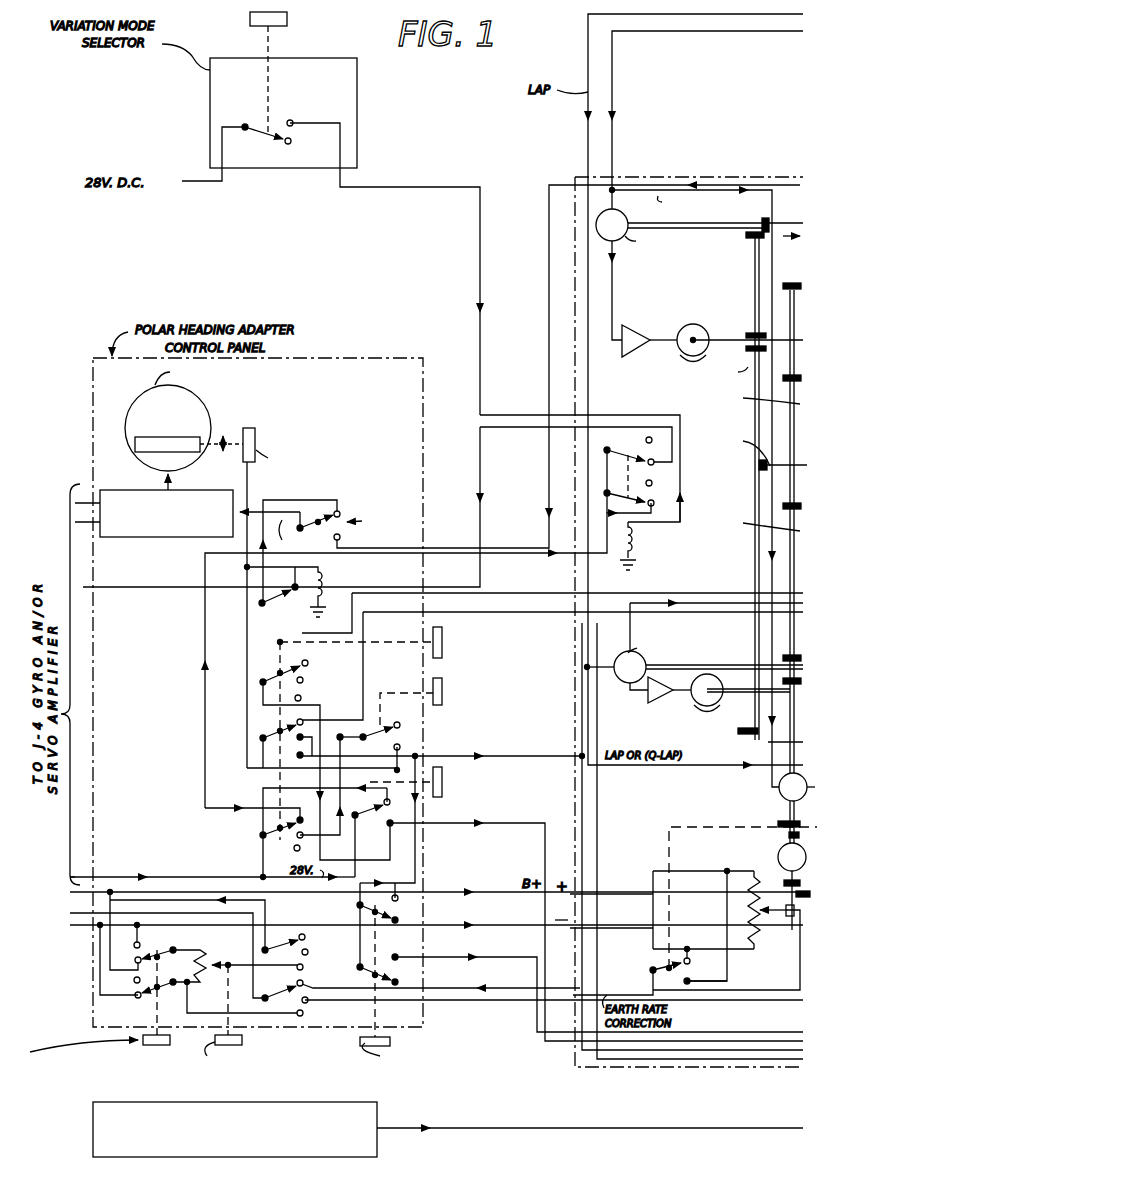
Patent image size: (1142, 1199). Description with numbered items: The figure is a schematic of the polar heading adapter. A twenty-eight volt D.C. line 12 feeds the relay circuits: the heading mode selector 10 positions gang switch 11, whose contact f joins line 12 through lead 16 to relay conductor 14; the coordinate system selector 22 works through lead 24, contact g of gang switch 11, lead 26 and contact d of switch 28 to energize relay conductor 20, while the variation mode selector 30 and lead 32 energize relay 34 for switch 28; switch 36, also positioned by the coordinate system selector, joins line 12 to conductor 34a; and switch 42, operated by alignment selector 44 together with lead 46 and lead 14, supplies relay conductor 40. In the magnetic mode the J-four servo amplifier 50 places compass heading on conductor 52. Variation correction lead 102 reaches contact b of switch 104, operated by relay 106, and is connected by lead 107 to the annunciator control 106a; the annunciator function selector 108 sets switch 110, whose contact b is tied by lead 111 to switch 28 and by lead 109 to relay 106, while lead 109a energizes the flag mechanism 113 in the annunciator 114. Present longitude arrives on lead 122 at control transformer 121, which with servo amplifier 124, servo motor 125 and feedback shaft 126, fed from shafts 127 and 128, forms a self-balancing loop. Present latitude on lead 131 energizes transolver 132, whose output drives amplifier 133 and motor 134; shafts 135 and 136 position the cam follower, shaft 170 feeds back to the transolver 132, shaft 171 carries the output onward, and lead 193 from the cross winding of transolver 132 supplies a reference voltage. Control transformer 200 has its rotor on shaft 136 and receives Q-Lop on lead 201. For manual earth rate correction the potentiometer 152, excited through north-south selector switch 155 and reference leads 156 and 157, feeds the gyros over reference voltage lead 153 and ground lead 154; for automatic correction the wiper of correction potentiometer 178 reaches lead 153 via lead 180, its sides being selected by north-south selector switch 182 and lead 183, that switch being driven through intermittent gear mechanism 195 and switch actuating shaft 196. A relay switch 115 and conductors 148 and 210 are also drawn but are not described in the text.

The variation mode selector 30 is at (210, 128).
The lead 32 is at (420, 187).
The lead 111 is at (480, 483).
The rectifier output lead 102 is at (548, 337).
The lead 131 is at (700, 14).
The lead 122 is at (760, 31).
The control transformer 121 is at (613, 209).
The lead 201 is at (773, 208).
The feedback shaft 126 is at (775, 228).
The shaft 128 is at (755, 291).
The shaft 136 is at (806, 283).
The servo amplifier 124 is at (626, 328).
The servo motor 125 is at (704, 326).
The shaft 127 is at (740, 341).
The transolver 132 is at (646, 663).
The shaft 170 is at (694, 666).
The shaft 171 is at (803, 661).
The amplifier 133 is at (640, 698).
The servo motor 134 is at (692, 703).
The output shaft 135 is at (748, 684).
The control transformer 200 is at (779, 793).
The intermittent gear mechanism 195 is at (778, 857).
The switch actuating shaft 196 is at (680, 827).
The north-south selector switch 182 is at (653, 968).
The correction potentiometer 178 is at (760, 944).
The lead 180 is at (800, 992).
The relay conductor 40 is at (748, 1032).
The conductor 34a is at (516, 826).
The relay conductor 20 is at (610, 1069).
The relay conductor 14 is at (519, 756).
The annunciator 114 is at (128, 401).
The flag mechanism 113 is at (256, 431).
The annunciator control 106a is at (138, 490).
The lead 109a is at (250, 495).
The relay switch 115 is at (330, 500).
The switch 104 is at (370, 523).
The lead 107 is at (290, 537).
The lead 109 is at (273, 574).
The relay 106 is at (323, 579).
The gang switch 11 is at (322, 726).
The heading mode selector 10 is at (406, 641).
The annunciator function selector 108 is at (430, 678).
The switch 110 is at (400, 726).
The signal line 148 is at (540, 612).
The signal line 210 is at (465, 593).
The lead 193 is at (705, 590).
The coordinate system selector 22 is at (437, 798).
The lead 46 is at (418, 876).
The lead 24 is at (263, 798).
The lead 16 is at (253, 818).
The lead 26 is at (205, 713).
The switch 36 is at (377, 833).
The reference voltage lead 156 is at (196, 882).
The 28 volt D.C. line 12 is at (70, 877).
The reference voltage lead 153 is at (70, 892).
The reference ground lead 154 is at (70, 913).
The reference voltage lead 157 is at (70, 925).
The north-south selector switch 155 is at (168, 947).
The potentiometer 152 is at (210, 964).
The switch 42 is at (376, 951).
The alignment selector 44 is at (378, 1021).
The lead 183 is at (453, 1002).
The switch 28 is at (668, 489).
The relay 34 is at (636, 545).
The J-4 servo amplifier 50 is at (377, 1143).
The conductor 52 is at (540, 1128).